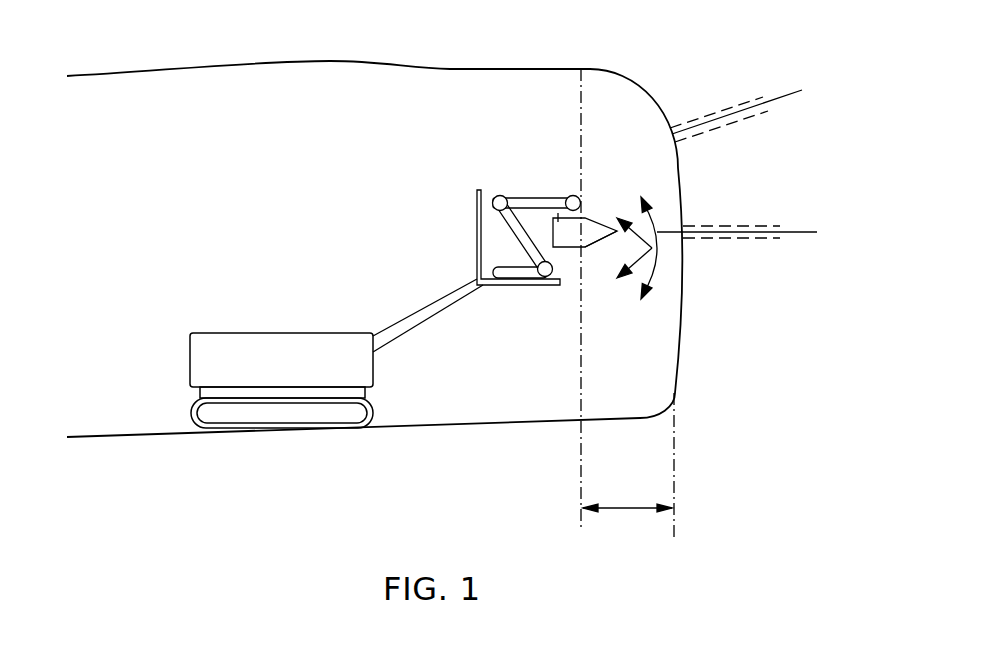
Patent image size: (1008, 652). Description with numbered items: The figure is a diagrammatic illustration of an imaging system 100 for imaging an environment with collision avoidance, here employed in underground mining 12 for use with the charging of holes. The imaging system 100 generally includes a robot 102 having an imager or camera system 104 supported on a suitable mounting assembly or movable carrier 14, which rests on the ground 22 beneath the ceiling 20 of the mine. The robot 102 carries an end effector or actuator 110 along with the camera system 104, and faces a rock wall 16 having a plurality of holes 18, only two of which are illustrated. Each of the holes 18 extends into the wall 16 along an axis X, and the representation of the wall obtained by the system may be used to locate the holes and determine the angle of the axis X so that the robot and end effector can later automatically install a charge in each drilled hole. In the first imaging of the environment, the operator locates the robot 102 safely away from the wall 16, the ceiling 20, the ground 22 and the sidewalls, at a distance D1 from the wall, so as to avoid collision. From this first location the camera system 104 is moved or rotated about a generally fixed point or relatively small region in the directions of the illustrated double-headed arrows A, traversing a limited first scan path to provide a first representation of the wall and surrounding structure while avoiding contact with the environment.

The underground mining 12 is at (381, 39).
The movable carrier 14 is at (284, 333).
The wall 16 is at (676, 364).
The holes 18 is at (727, 109).
The ceiling 20 is at (604, 84).
The ground 22 is at (529, 419).
The imaging system 100 is at (370, 234).
The robot 102 is at (542, 201).
The camera system 104 is at (582, 213).
The end effector 110 is at (600, 244).
The axis X is at (781, 98).
The double-headed arrows A is at (652, 248).
The distance D1 is at (628, 512).